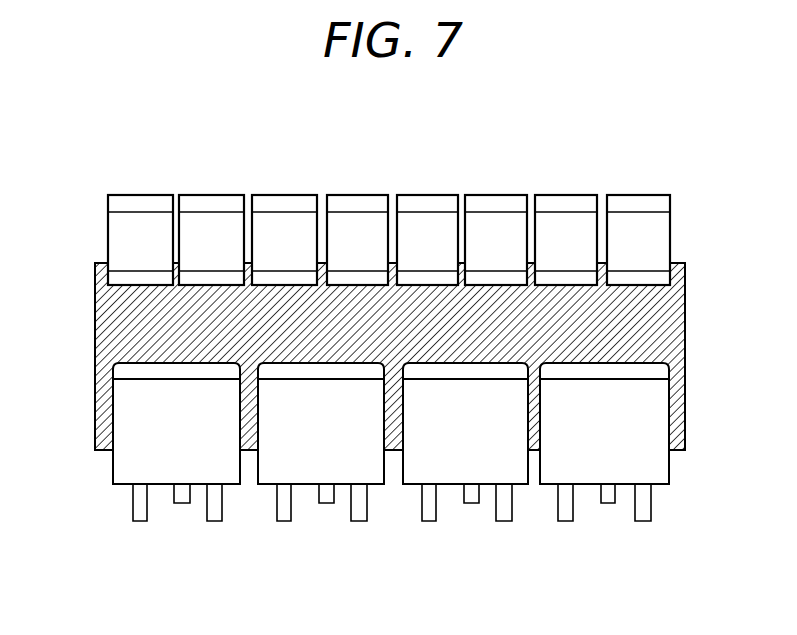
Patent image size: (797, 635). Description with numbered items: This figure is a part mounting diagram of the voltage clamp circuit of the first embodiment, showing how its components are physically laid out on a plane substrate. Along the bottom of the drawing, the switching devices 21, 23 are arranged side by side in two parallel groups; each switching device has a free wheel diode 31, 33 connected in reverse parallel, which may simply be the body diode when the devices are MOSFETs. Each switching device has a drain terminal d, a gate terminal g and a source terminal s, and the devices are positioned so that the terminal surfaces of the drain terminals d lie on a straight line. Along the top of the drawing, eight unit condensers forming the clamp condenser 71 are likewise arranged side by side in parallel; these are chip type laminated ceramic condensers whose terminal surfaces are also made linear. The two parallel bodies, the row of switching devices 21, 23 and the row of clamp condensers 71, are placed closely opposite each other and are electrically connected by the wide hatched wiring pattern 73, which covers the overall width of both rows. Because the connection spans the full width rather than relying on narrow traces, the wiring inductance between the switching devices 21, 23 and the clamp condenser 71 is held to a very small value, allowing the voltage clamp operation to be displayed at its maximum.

The clamp condenser 71 is at (682, 180).
The wiring pattern 73 is at (685, 322).
The drain terminal d is at (125, 374).
The gate terminal g is at (137, 505).
The source terminal s is at (197, 516).
The switching device 21 is at (211, 479).
The free wheel diode 31 is at (210, 479).
The switching device 23 is at (542, 486).
The free wheel diode 33 is at (682, 553).